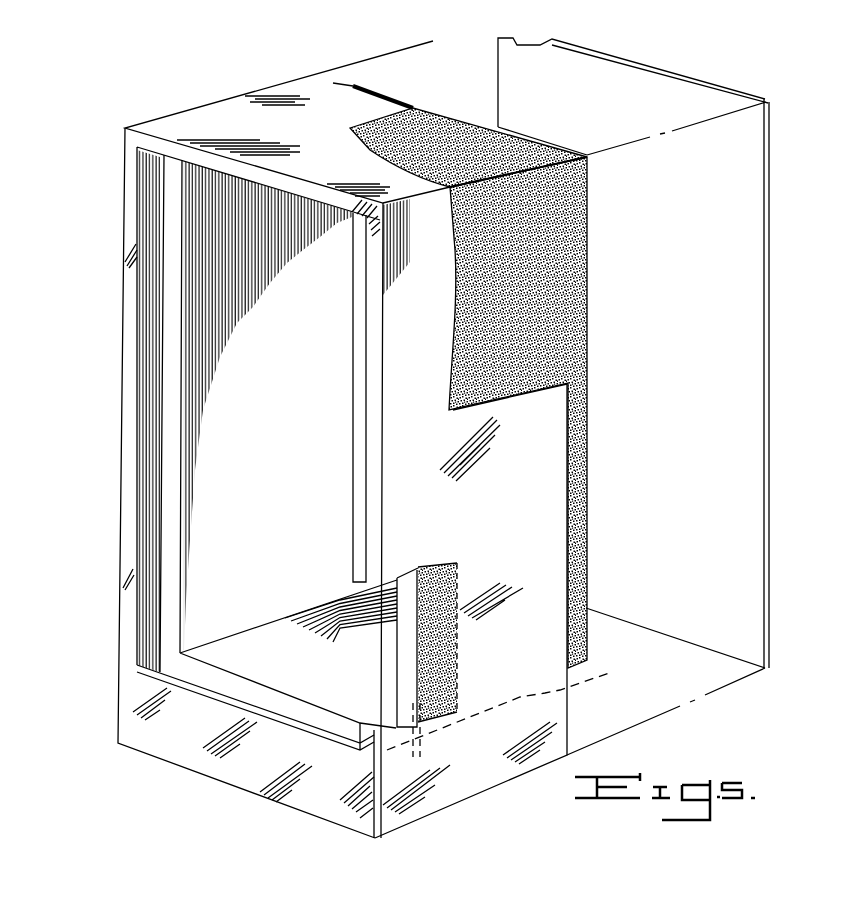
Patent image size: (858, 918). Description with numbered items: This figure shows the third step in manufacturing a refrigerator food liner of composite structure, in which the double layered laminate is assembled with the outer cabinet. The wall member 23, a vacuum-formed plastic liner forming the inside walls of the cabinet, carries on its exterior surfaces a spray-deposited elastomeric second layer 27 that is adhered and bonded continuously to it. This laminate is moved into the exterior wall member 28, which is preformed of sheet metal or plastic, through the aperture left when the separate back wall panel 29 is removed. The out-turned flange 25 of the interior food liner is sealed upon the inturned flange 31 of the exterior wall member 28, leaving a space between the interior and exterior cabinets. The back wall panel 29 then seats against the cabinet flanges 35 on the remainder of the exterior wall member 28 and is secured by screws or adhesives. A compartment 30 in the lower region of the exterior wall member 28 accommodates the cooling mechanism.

The wall member 23 is at (328, 671).
The out-turned flange 25 is at (172, 368).
The second layer 27 is at (570, 307).
The exterior wall member 28 is at (503, 507).
The back wall panel 29 is at (770, 245).
The compartment 30 is at (519, 701).
The inturned flange 31 is at (152, 148).
The inturned flanges 35 is at (420, 106).